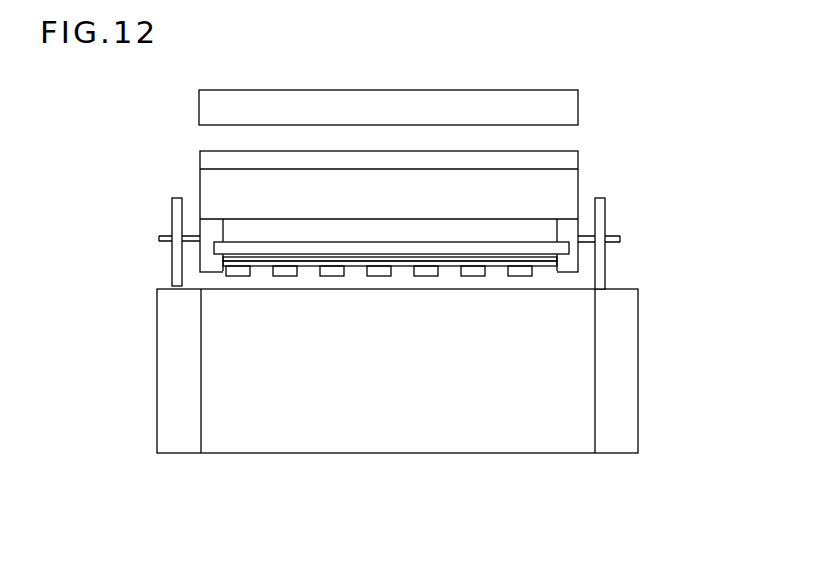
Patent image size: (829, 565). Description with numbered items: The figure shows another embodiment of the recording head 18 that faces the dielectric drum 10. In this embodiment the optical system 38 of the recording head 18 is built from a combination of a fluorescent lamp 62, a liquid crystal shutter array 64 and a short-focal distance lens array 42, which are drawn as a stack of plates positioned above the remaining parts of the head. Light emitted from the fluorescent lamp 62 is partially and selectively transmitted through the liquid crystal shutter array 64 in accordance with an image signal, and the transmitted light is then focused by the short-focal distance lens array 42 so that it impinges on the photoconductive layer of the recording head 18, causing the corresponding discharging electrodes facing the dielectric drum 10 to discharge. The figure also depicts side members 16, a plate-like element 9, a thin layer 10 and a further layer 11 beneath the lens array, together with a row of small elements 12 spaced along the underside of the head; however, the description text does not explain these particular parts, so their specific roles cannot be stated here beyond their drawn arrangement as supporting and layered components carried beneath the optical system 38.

The fluorescent lamp 62 is at (570, 112).
The liquid crystal shutter array 64 is at (570, 165).
The short-focal distance lens array 42 is at (565, 195).
The optical system 38 is at (178, 147).
The recording head 18 is at (77, 164).
The support guide 16 is at (173, 218).
The lead frame 9 is at (262, 250).
The dielectric drum 10 is at (315, 257).
The substrate 11 is at (405, 263).
The semiconductor chips 12 is at (238, 277).